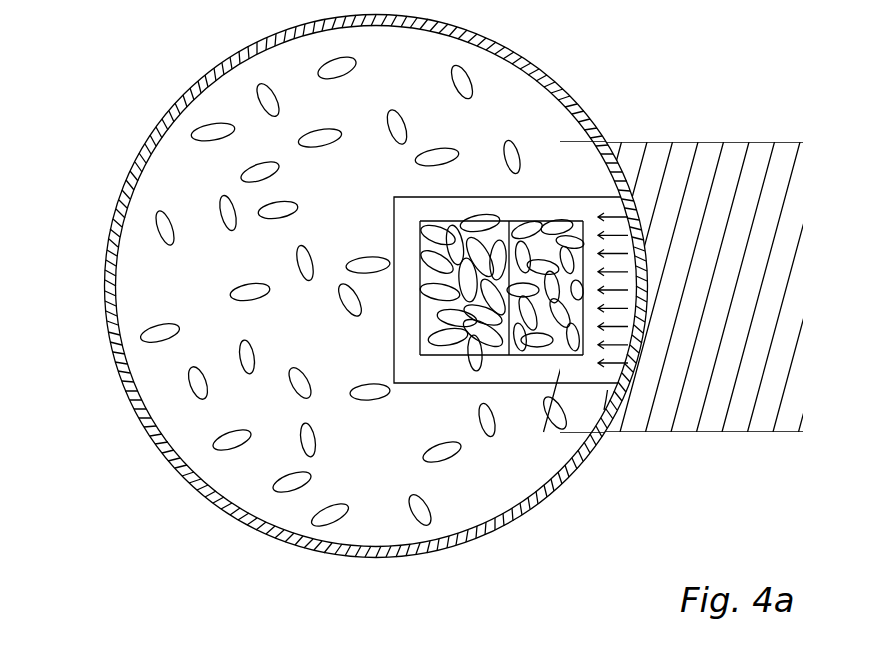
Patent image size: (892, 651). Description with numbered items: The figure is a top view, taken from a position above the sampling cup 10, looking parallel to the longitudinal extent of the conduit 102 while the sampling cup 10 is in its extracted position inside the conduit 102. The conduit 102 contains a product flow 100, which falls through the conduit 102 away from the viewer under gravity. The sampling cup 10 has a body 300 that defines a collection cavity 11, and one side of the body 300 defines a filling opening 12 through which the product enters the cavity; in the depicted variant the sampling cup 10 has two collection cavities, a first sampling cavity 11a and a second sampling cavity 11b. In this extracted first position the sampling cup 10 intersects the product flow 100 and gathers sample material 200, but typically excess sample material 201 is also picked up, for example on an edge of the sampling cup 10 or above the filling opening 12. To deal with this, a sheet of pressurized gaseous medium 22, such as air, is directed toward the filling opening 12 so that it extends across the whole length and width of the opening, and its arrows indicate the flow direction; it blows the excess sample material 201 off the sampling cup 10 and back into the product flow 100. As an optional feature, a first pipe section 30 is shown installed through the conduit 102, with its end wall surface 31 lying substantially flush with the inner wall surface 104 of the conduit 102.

The product flow 100 is at (352, 286).
The conduit 102 is at (563, 76).
The inner wall surface 104 is at (182, 432).
The sampling cup 10 is at (451, 301).
The collection cavity 11 is at (449, 325).
The first sampling cavity 11a is at (447, 218).
The second sampling cavity 11b is at (535, 357).
The filling opening 12 is at (455, 227).
The sample material 200 is at (419, 302).
The excess sample material 201 is at (483, 222).
The sheet of pressurized gaseous medium 22 is at (640, 245).
The first pipe section 30 is at (752, 152).
The body 300 is at (517, 197).
The end wall surface 31 is at (583, 397).